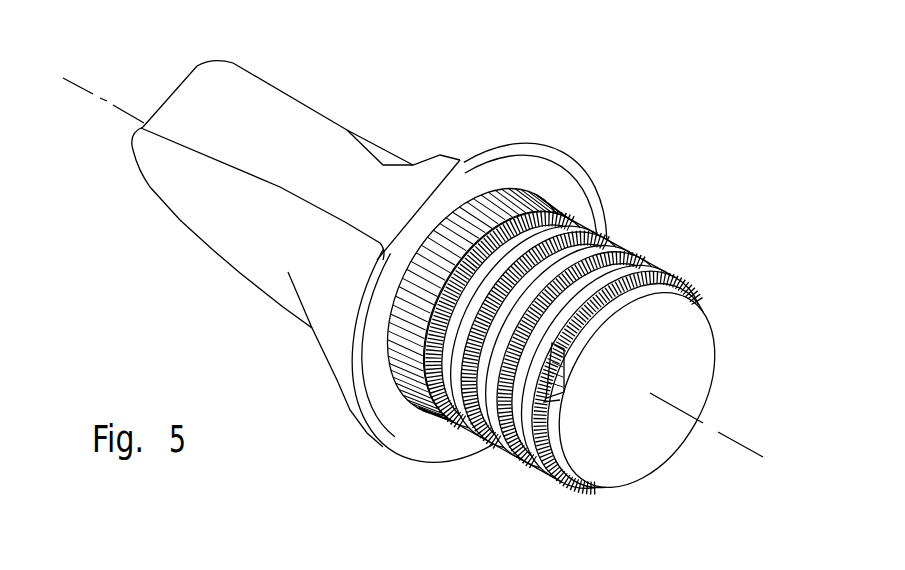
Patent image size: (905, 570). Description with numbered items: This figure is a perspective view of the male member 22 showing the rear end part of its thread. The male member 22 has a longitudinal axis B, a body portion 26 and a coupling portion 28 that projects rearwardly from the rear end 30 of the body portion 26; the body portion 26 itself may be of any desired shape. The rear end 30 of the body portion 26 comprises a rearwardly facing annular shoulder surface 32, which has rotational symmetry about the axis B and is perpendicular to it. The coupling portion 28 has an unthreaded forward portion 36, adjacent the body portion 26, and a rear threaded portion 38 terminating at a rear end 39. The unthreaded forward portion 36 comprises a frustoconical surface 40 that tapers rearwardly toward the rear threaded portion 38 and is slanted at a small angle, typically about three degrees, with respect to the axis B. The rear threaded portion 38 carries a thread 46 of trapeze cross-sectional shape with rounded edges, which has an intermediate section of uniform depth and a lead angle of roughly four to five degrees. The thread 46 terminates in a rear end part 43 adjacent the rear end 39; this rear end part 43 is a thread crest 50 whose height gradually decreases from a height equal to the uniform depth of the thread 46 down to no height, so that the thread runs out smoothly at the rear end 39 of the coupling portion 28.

The male member 22 is at (439, 275).
The body portion 26 is at (287, 113).
The coupling portion 28 is at (531, 310).
The rear end 30 is at (415, 482).
The rearwardly facing annular shoulder surface 32 is at (466, 320).
The unthreaded forward portion 36 is at (388, 390).
The rear threaded portion 38 is at (477, 477).
The rear end 39 is at (632, 478).
The frustoconical surface 40 is at (480, 212).
The rear end part 43 is at (548, 405).
The thread 46 is at (628, 224).
The thread crest 50 is at (563, 372).
The longitudinal axis B is at (113, 106).